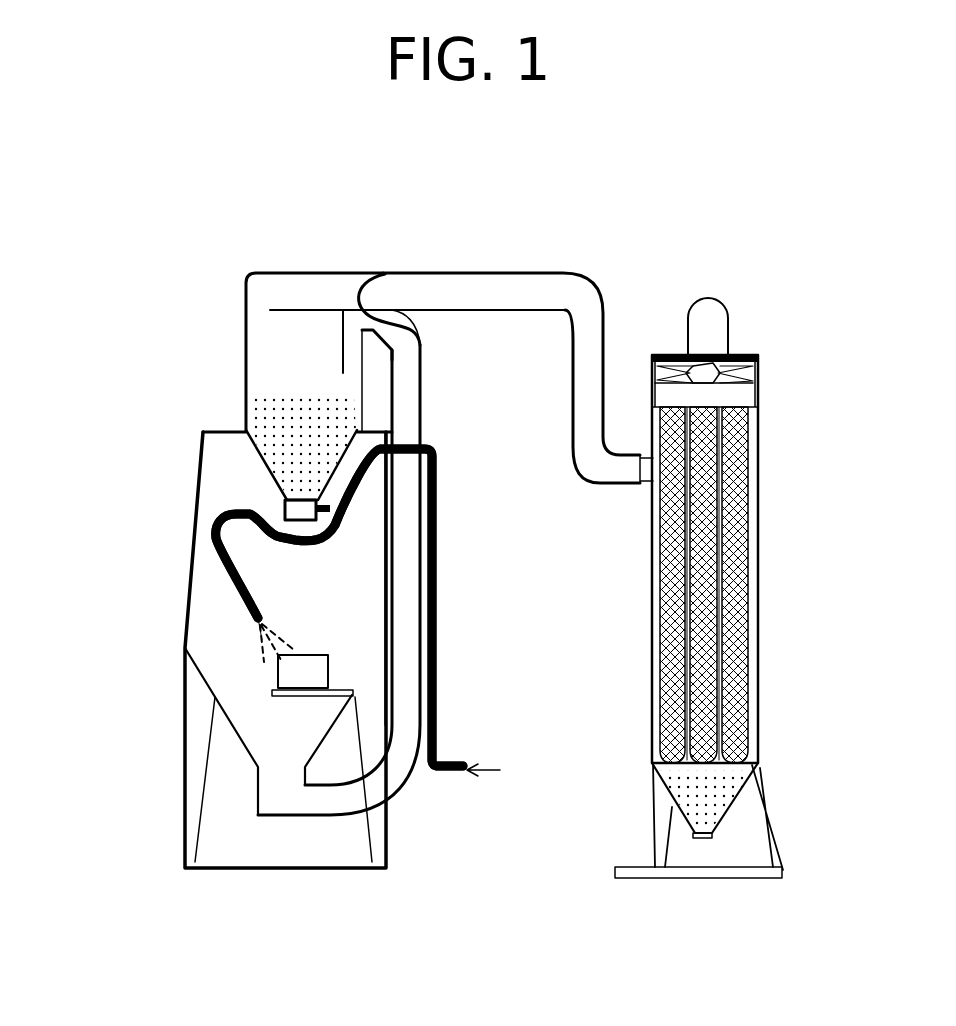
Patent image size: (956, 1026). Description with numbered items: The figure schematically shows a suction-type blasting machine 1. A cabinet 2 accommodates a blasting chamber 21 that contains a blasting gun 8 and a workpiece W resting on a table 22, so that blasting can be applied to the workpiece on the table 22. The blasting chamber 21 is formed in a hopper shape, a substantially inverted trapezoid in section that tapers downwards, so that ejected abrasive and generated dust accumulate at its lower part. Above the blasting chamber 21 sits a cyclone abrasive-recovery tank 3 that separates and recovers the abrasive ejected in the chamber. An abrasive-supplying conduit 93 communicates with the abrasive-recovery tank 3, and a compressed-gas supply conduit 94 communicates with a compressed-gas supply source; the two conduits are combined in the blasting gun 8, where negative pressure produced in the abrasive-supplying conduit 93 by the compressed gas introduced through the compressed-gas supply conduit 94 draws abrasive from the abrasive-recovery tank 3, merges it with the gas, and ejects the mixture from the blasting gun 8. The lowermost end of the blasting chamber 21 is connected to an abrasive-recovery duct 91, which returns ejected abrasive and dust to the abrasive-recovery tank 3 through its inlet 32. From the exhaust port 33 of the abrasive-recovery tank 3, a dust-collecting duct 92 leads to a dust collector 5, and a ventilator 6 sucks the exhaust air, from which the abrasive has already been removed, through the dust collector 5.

The blasting machine 1 is at (284, 232).
The cabinet 2 is at (203, 465).
The abrasive-recovery tank 3 is at (246, 353).
The dust collector 5 is at (760, 632).
The ventilator 6 is at (753, 387).
The blasting gun 8 is at (257, 603).
The blasting chamber 21 is at (348, 593).
The table 22 is at (290, 697).
The inlet 32 is at (400, 340).
The exhaust port 33 is at (383, 290).
The abrasive-recovery duct 91 is at (420, 407).
The dust-collecting duct 92 is at (535, 270).
The abrasive-supplying conduit 93 is at (330, 551).
The compressed-gas supply conduit 94 is at (437, 617).